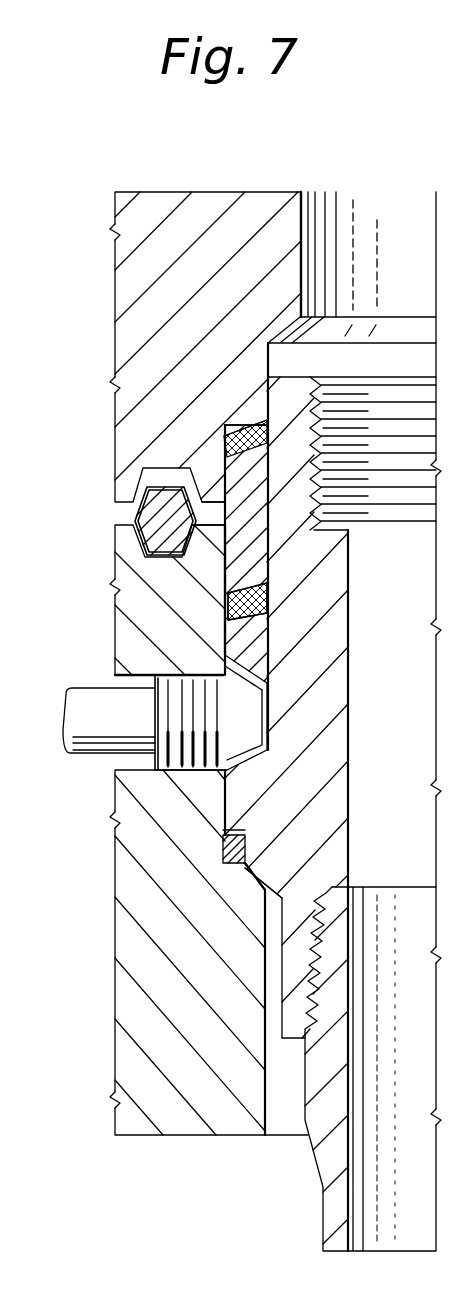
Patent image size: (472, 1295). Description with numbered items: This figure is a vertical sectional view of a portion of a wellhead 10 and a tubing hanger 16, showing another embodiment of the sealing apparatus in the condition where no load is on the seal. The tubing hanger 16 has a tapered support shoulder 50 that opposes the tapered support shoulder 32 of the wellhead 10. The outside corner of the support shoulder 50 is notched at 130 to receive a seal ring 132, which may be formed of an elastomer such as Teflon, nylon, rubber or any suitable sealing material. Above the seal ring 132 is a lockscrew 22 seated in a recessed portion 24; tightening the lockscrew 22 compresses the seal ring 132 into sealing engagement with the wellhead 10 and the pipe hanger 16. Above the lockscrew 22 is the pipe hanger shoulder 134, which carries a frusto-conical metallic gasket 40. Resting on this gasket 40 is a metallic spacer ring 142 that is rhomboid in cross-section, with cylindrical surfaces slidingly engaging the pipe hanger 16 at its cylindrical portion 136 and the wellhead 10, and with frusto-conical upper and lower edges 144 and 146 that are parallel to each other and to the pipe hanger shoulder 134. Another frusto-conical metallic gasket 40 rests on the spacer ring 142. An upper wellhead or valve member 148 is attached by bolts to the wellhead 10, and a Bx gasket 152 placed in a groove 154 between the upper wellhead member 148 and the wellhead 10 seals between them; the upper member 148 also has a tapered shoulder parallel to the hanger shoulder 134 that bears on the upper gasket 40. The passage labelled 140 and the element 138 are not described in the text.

The wellhead 10 is at (136, 977).
The tubing hanger 16 is at (346, 751).
The lockscrew 22 is at (247, 715).
The recessed portion 24 is at (257, 667).
The tapered support shoulder 32 is at (245, 880).
The frusto-conical metallic gasket 40 is at (226, 437).
The tapered support shoulder 50 is at (264, 874).
The notch 130 is at (229, 835).
The seal ring 132 is at (228, 850).
The pipe hanger shoulder 134 is at (259, 614).
The cylindrical portion 136 is at (268, 565).
The flange 138 is at (232, 639).
The bore 140 is at (208, 569).
The spacer ring 142 is at (258, 533).
The frusto-conical upper edge 144 is at (231, 459).
The frusto-conical lower edge 146 is at (263, 584).
The upper wellhead member 148 is at (163, 316).
The Bx gasket 152 is at (162, 510).
The groove 154 is at (252, 428).